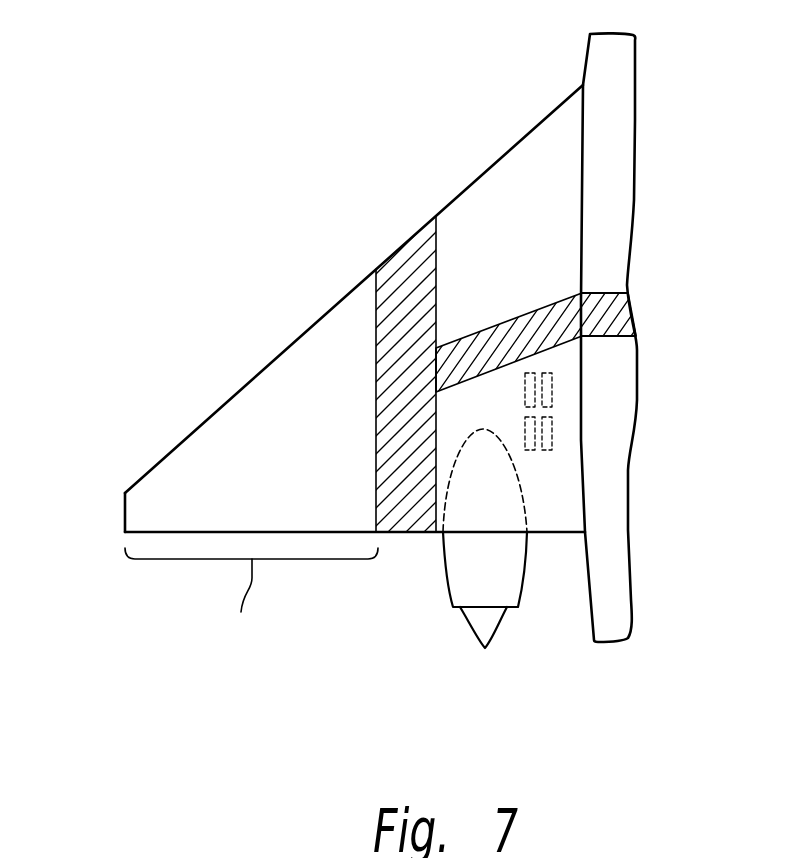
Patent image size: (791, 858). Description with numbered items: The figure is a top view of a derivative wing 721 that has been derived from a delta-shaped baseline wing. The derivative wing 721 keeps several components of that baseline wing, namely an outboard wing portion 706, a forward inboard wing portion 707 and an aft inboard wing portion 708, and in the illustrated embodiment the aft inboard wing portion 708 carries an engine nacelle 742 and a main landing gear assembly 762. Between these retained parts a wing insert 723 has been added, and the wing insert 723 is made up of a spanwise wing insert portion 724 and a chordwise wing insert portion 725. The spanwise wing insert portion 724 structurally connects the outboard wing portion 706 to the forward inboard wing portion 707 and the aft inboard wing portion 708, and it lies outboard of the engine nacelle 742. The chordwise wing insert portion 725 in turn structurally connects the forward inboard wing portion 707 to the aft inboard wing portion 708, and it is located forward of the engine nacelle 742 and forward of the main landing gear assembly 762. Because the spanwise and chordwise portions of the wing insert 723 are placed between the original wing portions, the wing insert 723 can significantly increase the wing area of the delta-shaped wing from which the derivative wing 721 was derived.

The outboard wing portion 706 is at (251, 601).
The forward inboard wing portion 707 is at (512, 177).
The aft inboard wing portion 708 is at (545, 518).
The derivative wing 721 is at (125, 518).
The wing insert 723 is at (354, 358).
The spanwise wing insert portion 724 is at (390, 332).
The chordwise wing insert portion 725 is at (534, 311).
The engine nacelle 742 is at (447, 590).
The main landing gear assembly 762 is at (552, 428).